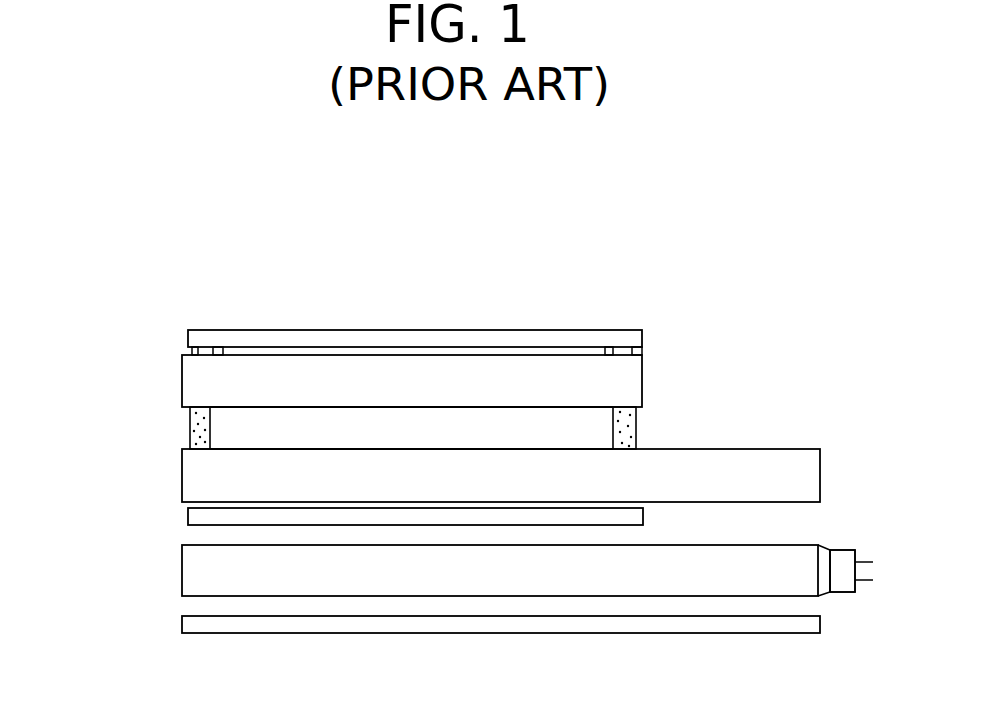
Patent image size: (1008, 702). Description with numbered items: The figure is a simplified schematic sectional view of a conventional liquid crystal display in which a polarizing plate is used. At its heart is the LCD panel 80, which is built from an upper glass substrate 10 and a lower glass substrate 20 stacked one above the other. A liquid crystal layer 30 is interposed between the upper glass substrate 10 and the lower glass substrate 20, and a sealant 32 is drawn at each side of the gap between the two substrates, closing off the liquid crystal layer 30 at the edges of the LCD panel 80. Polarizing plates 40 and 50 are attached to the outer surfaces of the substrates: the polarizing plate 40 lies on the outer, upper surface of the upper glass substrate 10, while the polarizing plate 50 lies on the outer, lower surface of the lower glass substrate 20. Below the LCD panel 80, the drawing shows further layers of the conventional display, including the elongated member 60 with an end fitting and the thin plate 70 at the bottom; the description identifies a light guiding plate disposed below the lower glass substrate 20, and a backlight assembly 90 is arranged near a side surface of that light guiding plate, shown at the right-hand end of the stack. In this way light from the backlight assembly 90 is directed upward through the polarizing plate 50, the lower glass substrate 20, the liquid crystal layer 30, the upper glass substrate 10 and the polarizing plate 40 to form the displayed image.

The upper glass substrate 10 is at (197, 379).
The lower glass substrate 20 is at (457, 475).
The liquid crystal layer 30 is at (304, 423).
The sealant 32 is at (197, 430).
The polarizing plate 40 is at (197, 341).
The polarizing plate 50 is at (197, 515).
The lamp 60 is at (197, 570).
The reflector 70 is at (197, 624).
The LCD panel 80 is at (425, 382).
The backlight assembly 90 is at (842, 558).